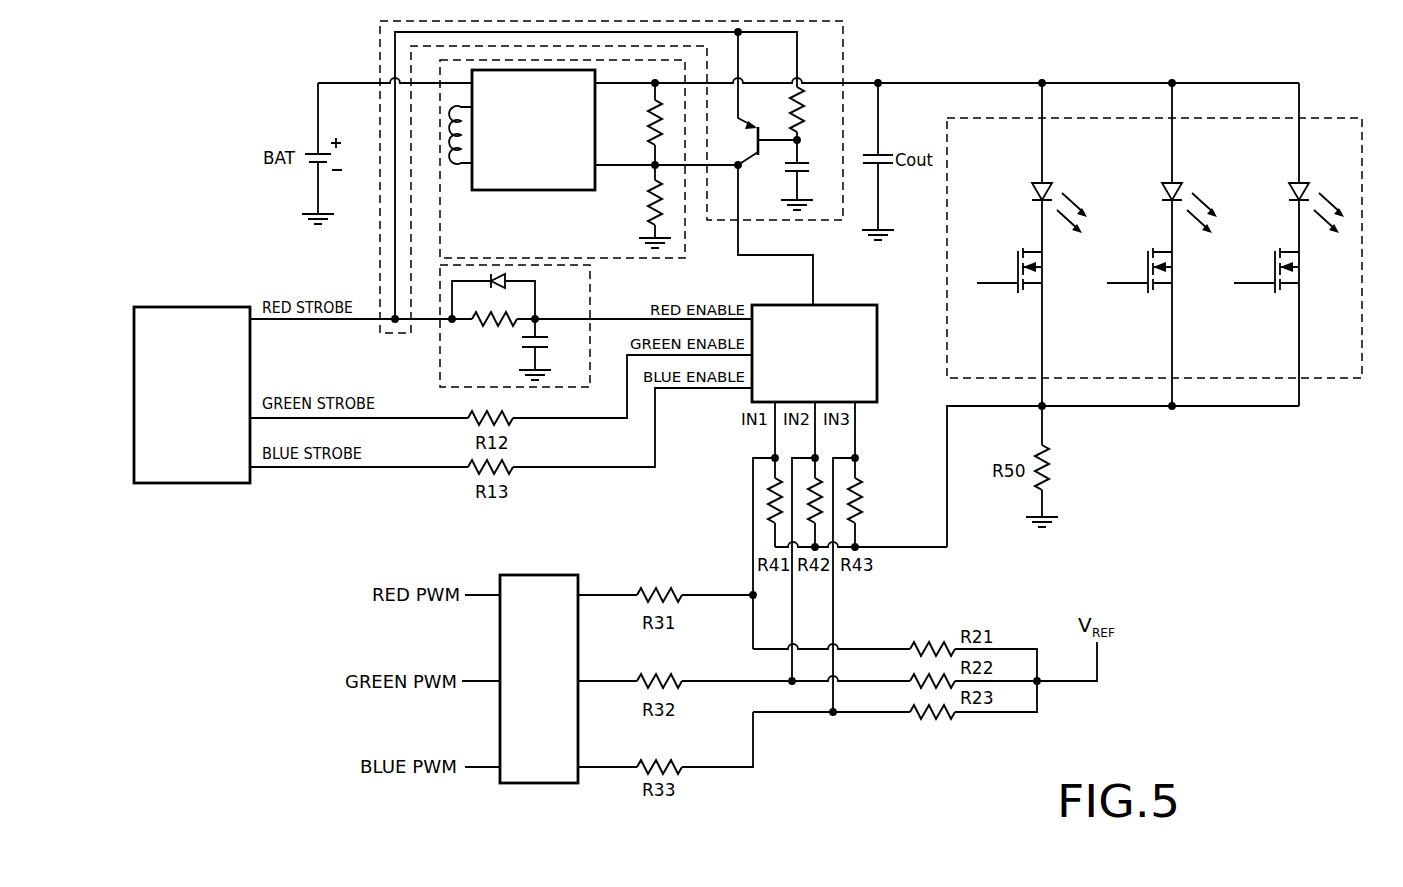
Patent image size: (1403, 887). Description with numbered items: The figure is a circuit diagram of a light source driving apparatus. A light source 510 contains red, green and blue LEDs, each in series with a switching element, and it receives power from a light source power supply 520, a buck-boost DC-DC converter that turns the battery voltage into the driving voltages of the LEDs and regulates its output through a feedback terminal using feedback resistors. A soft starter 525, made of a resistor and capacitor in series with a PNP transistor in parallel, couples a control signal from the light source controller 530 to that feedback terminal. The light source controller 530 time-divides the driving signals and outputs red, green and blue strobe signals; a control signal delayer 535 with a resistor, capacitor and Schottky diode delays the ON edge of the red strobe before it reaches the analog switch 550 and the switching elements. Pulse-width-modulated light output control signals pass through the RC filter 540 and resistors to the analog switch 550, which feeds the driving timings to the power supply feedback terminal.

The light source 510 is at (1328, 118).
The light source power supply 520 is at (533, 258).
The soft starter 525 is at (845, 40).
The light source controller 530 is at (191, 307).
The control signal delayer 535 is at (590, 285).
The resistor-capacitor (RC) filter 540 is at (540, 575).
The analog switch 550 is at (877, 353).